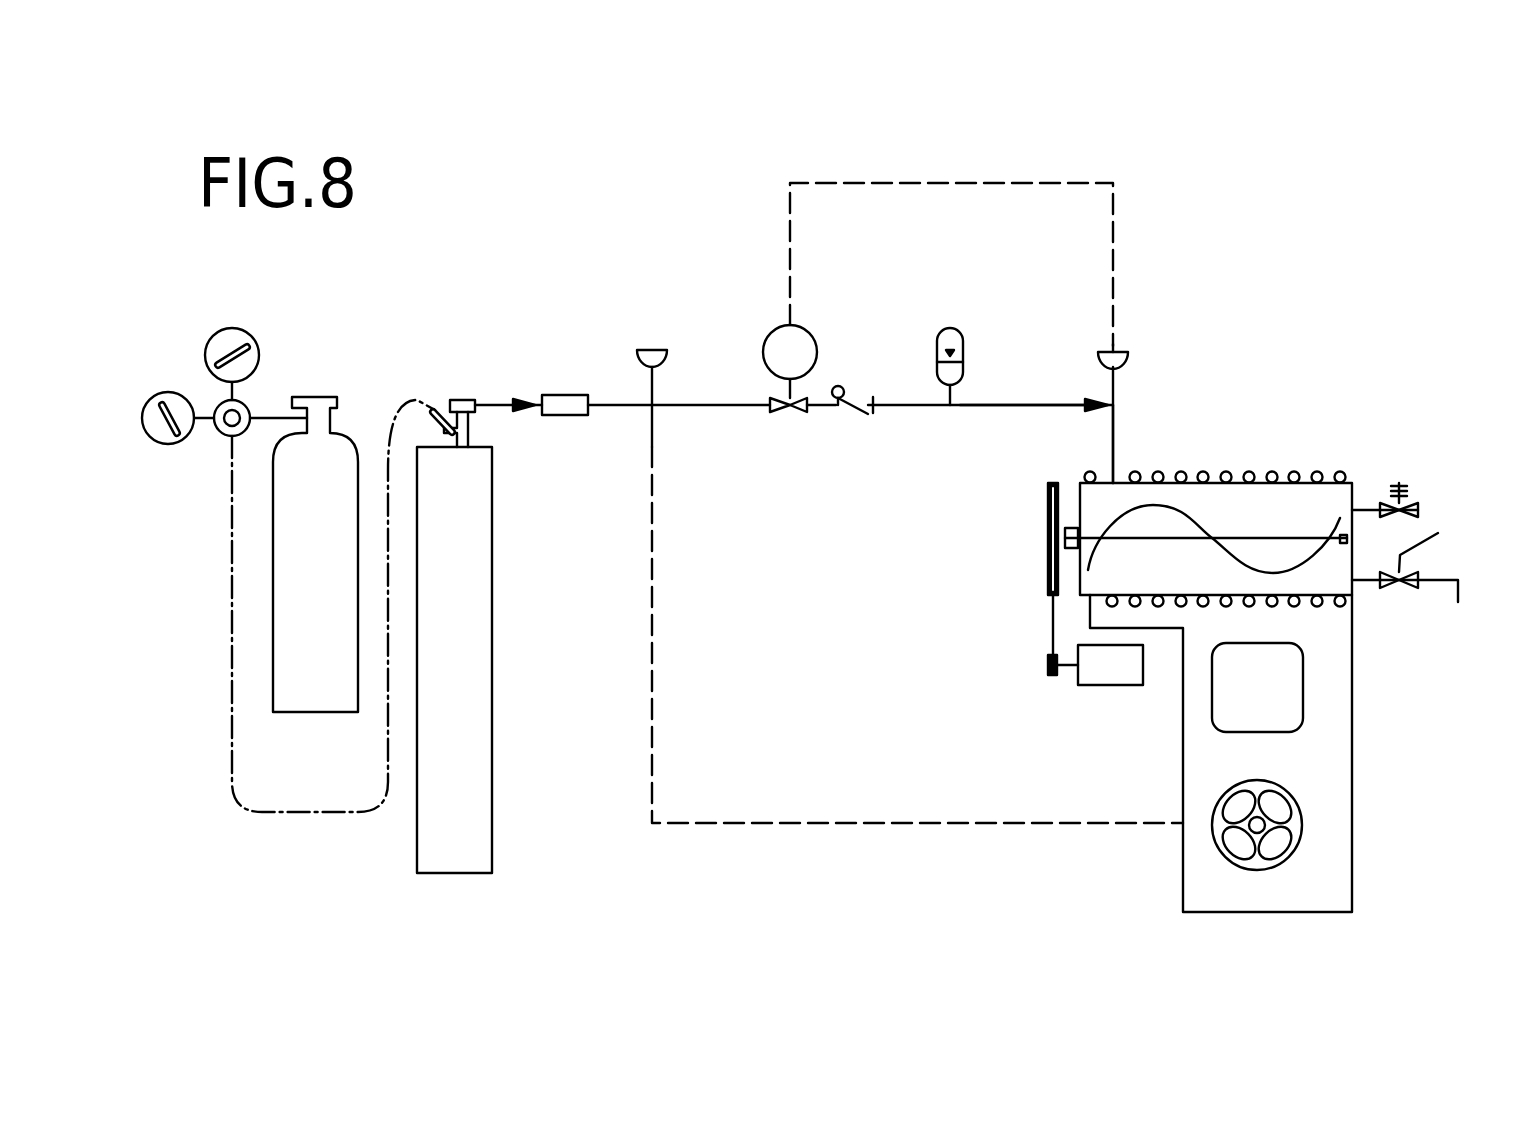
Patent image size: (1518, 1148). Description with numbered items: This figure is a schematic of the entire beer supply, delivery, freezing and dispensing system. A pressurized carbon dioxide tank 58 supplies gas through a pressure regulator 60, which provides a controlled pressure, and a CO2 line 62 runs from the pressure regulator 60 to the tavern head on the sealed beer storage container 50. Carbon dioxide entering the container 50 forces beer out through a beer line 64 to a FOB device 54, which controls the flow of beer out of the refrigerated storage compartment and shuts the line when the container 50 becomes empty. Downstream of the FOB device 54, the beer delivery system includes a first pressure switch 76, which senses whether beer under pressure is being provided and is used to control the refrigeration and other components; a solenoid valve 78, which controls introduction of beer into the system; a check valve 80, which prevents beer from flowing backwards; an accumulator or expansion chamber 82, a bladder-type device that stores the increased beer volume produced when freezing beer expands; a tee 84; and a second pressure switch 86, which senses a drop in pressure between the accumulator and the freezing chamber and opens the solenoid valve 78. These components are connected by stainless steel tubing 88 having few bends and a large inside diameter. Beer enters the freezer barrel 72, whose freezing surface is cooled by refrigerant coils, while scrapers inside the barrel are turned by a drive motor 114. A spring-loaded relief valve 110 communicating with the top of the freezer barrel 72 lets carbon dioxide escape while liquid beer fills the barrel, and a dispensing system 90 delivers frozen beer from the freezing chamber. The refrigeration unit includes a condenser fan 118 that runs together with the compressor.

The beer storage container 50 is at (477, 735).
The FOB device 54 is at (560, 395).
The pressurized carbon dioxide tank 58 is at (352, 440).
The pressure regulator 60 is at (221, 437).
The CO2 line 62 is at (303, 813).
The beer line 64 is at (500, 398).
The freezer barrel 72 is at (1353, 483).
The first pressure switch 76 is at (667, 353).
The solenoid valve 78 is at (783, 415).
The check valve 80 is at (853, 398).
The accumulator or expansion chamber 82 is at (967, 343).
The tee 84 is at (1115, 403).
The second pressure switch 86 is at (1128, 360).
The stainless steel tubing 88 is at (1033, 407).
The dispensing system 90 is at (1418, 562).
The relief valve 110 is at (1415, 490).
The drive motor 114 is at (1073, 680).
The condenser fan 118 is at (1283, 787).